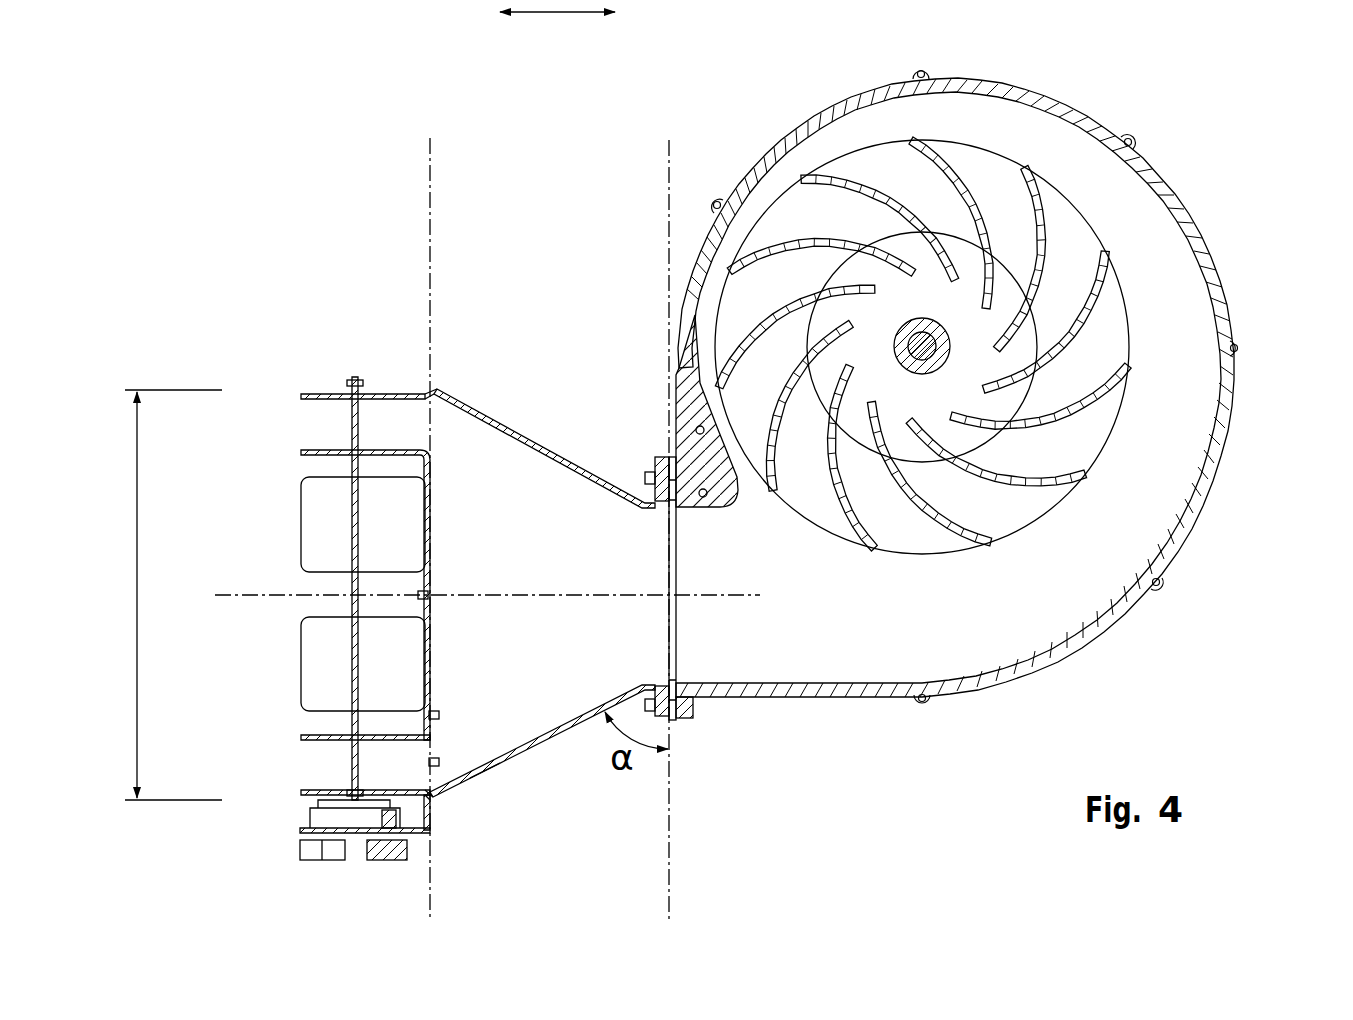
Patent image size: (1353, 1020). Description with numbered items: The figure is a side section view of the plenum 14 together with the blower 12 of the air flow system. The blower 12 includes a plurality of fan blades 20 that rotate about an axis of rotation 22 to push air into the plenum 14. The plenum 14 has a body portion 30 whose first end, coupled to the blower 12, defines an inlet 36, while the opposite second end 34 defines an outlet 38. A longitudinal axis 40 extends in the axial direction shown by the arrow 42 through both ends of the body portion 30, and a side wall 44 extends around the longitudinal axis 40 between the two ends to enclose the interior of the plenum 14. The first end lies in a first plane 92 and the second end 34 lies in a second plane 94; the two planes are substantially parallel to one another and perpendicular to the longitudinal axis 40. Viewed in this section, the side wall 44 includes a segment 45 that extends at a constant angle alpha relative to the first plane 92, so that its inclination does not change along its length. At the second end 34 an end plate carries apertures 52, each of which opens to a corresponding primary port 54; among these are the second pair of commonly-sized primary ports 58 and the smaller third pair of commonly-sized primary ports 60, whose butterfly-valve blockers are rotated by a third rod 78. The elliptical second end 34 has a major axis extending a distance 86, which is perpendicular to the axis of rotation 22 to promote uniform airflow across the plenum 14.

The blower 12 is at (1155, 154).
The plenum 14 is at (514, 290).
The fan blades 20 is at (1100, 392).
The axis of rotation 22 is at (926, 345).
The body portion 30 is at (542, 430).
The second end 34 is at (444, 514).
The inlet 36 is at (683, 643).
The outlet 38 is at (480, 687).
The longitudinal axis 40 is at (245, 578).
The arrow 42 is at (553, 14).
The side wall 44 is at (540, 760).
The segment 45 is at (485, 790).
The apertures 52 is at (436, 741).
The primary port 54 is at (310, 511).
The second pair of commonly-sized primary ports 58 is at (310, 487).
The third pair of commonly-sized primary ports 60 is at (325, 392).
The third rod 78 is at (352, 722).
The distance 86 is at (137, 655).
The first plane 92 is at (668, 145).
The second plane 94 is at (430, 158).